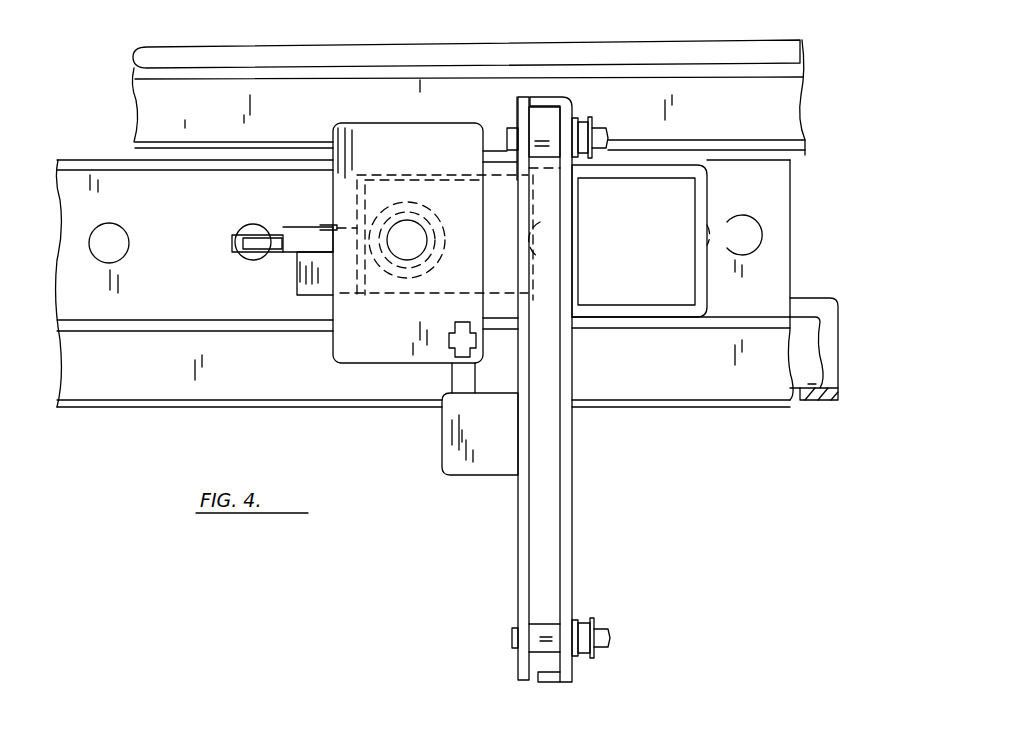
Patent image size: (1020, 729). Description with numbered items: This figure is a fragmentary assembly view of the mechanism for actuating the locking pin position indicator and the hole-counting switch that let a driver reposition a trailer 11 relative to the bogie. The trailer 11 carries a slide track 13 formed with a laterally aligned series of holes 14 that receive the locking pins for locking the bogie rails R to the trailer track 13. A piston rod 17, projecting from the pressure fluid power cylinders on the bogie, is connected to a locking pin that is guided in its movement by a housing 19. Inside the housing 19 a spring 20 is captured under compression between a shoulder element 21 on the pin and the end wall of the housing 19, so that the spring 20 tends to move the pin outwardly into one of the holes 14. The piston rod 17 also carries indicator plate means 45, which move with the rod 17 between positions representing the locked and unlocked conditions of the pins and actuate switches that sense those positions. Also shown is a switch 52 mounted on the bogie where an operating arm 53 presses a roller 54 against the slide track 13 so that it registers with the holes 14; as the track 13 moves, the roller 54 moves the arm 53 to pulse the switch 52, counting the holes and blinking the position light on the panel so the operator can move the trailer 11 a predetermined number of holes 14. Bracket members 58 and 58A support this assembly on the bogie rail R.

The trailer 11 is at (369, 46).
The slide track 13 is at (786, 265).
The holes 14 is at (240, 262).
The piston rod 17 is at (407, 262).
The housing 19 is at (497, 190).
The spring 20 is at (400, 212).
The shoulder element 21 is at (380, 206).
The indicator plate means 45 is at (442, 420).
The switch 52 is at (297, 290).
The operating arm 53 is at (290, 230).
The roller 54 is at (233, 253).
The bracket 58 is at (512, 521).
The square tube 58A is at (707, 199).
The bogie rails R is at (812, 325).